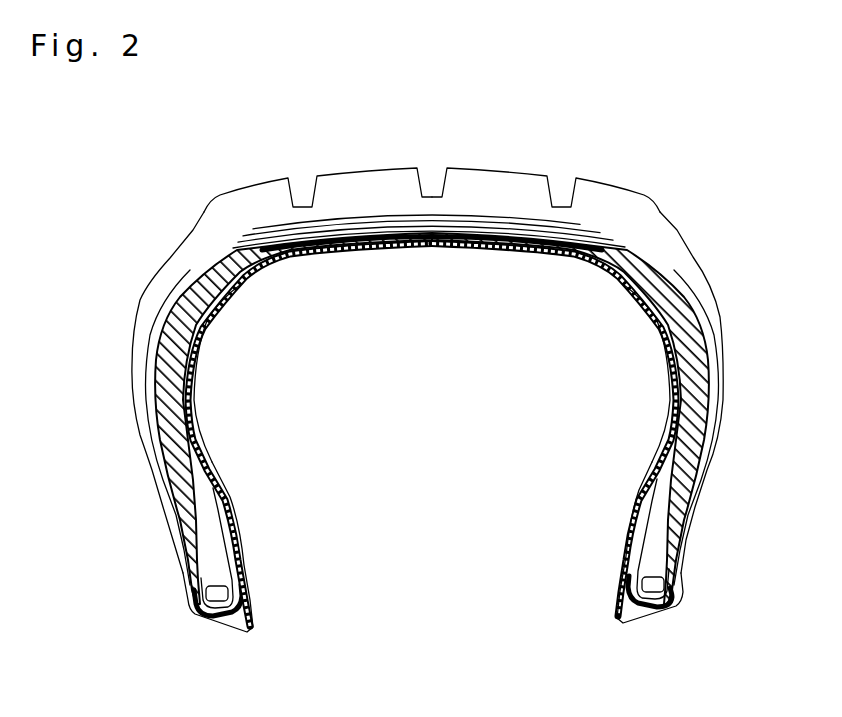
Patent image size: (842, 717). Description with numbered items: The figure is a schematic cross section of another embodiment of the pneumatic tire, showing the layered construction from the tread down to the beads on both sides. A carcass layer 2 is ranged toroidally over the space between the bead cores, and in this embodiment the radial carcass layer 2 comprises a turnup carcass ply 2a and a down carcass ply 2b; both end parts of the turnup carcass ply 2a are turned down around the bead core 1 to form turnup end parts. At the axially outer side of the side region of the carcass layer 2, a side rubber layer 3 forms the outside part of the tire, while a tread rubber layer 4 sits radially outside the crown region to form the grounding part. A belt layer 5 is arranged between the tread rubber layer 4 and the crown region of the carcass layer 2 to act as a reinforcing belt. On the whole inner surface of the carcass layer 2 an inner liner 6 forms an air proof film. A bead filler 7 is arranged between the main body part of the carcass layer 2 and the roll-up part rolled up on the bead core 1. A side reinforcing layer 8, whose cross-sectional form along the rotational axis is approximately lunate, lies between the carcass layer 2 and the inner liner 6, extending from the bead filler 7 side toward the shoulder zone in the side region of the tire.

The bead core 1 is at (215, 597).
The carcass layer 2 is at (386, 451).
The turnup carcass ply 2a is at (160, 434).
The down carcass ply 2b is at (185, 590).
The side rubber layer 3 is at (136, 343).
The tread rubber layer 4 is at (461, 188).
The belt layer 5 is at (580, 223).
The inner liner 6 is at (190, 403).
The bead filler 7 is at (207, 534).
The side reinforcing layer 8 is at (182, 348).